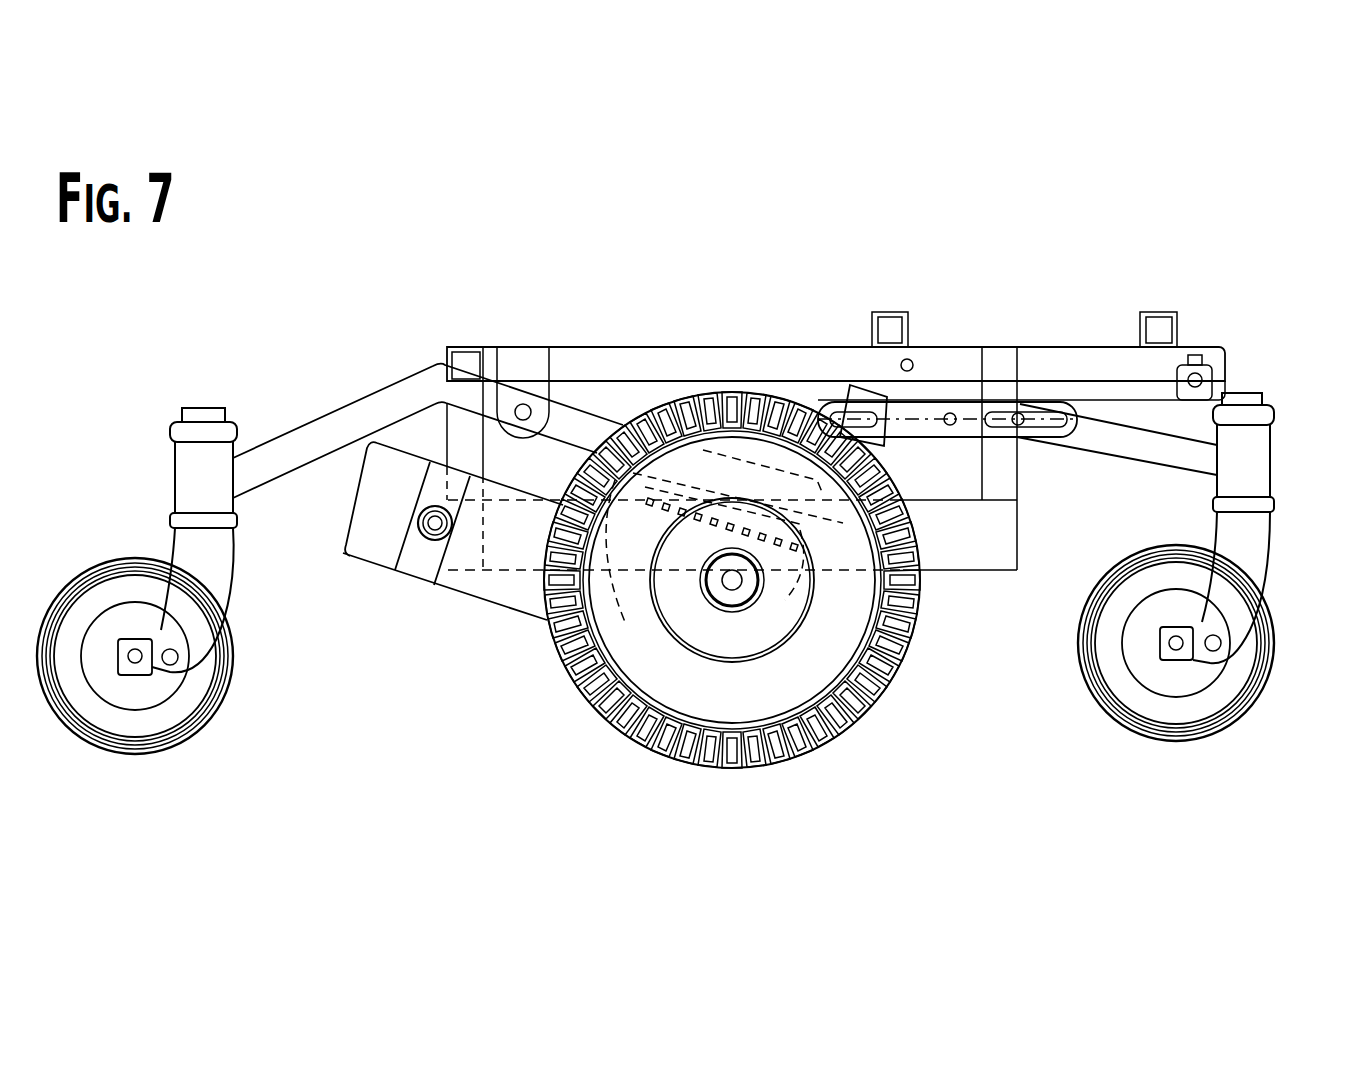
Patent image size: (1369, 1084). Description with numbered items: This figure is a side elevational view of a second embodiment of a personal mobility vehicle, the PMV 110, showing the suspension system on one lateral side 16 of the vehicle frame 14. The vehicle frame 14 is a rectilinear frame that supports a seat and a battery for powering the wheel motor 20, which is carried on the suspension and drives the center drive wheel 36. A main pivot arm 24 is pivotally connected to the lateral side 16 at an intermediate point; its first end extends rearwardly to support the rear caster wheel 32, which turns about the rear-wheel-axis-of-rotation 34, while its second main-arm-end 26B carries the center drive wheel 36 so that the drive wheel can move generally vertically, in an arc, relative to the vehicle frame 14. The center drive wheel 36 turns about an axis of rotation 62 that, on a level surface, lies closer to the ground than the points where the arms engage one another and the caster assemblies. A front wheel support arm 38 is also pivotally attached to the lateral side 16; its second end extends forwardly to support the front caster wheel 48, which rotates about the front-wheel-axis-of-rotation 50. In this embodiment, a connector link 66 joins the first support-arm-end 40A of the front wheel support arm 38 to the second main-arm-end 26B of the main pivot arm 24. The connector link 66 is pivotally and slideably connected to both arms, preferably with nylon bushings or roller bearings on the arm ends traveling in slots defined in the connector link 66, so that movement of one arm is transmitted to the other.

The PMV 110 is at (732, 338).
The vehicle frame 14 is at (825, 357).
The lateral side 16 is at (592, 358).
The wheel motor 20 is at (368, 552).
The main pivot arm 24 is at (327, 430).
The second main-arm-end 26B is at (866, 392).
The rear caster wheel 32 is at (193, 725).
The rear-wheel-axis-of-rotation 34 is at (133, 660).
The center drive wheel 36 is at (657, 752).
The front wheel support arm 38 is at (1110, 447).
The first support-arm-end 40A is at (1018, 412).
The front caster wheel 48 is at (1255, 700).
The front-wheel-axis-of-rotation 50 is at (1176, 650).
The axis of rotation 62 is at (728, 587).
The connector link 66 is at (928, 410).